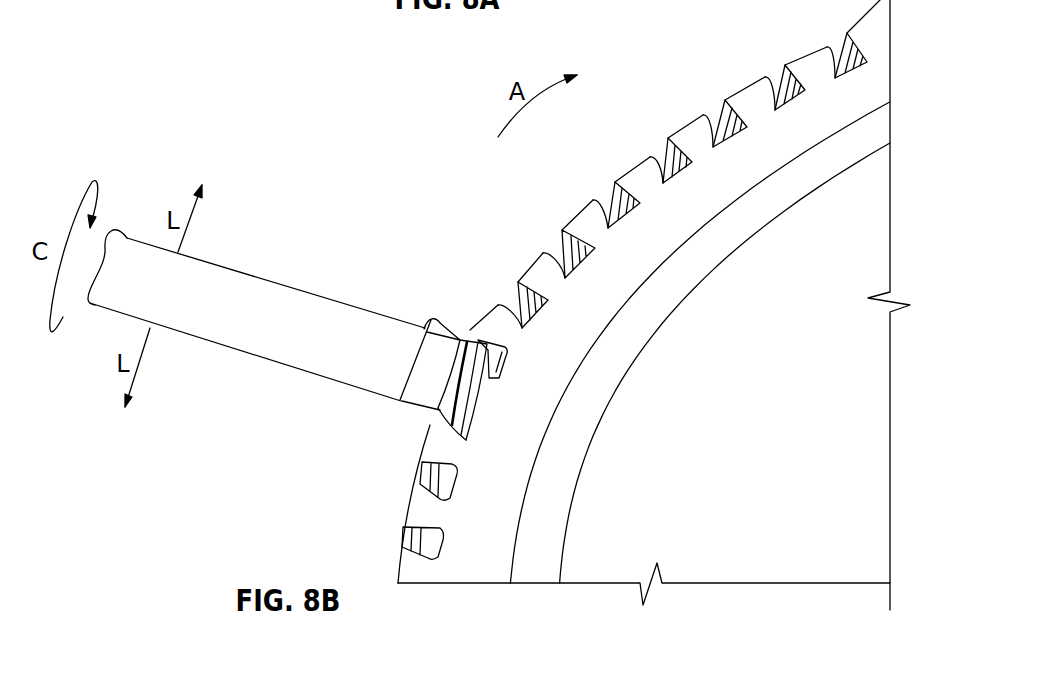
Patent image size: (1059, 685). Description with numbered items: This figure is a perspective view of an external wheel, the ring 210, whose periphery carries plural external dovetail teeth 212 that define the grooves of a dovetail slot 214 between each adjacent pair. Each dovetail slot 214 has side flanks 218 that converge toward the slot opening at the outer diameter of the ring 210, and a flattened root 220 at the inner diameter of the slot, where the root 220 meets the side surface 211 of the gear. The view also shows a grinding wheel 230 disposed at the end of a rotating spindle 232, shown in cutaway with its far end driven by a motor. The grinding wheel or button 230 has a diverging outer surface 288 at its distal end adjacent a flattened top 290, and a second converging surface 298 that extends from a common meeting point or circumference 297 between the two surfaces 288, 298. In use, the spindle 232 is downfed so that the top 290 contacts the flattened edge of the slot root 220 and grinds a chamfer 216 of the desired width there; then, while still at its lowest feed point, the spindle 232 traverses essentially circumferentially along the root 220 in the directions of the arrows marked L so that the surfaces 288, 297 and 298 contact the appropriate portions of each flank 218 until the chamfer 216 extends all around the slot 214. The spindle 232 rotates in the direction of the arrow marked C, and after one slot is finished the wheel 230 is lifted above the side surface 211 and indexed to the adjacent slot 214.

The ring 210 is at (495, 168).
The side surface 211 is at (655, 220).
The external dovetail teeth 212 is at (634, 170).
The dovetail slot 214 is at (660, 170).
The chamfer 216 is at (490, 315).
The side flanks 218 is at (718, 118).
The flattened root 220 is at (585, 258).
The grinding wheel 230 is at (427, 308).
The spindle 232 is at (265, 362).
The diverging outer surface 288 is at (450, 413).
The flattened top 290 is at (474, 391).
The common meeting point or circumference 297 is at (462, 337).
The second converging surface 298 is at (413, 408).